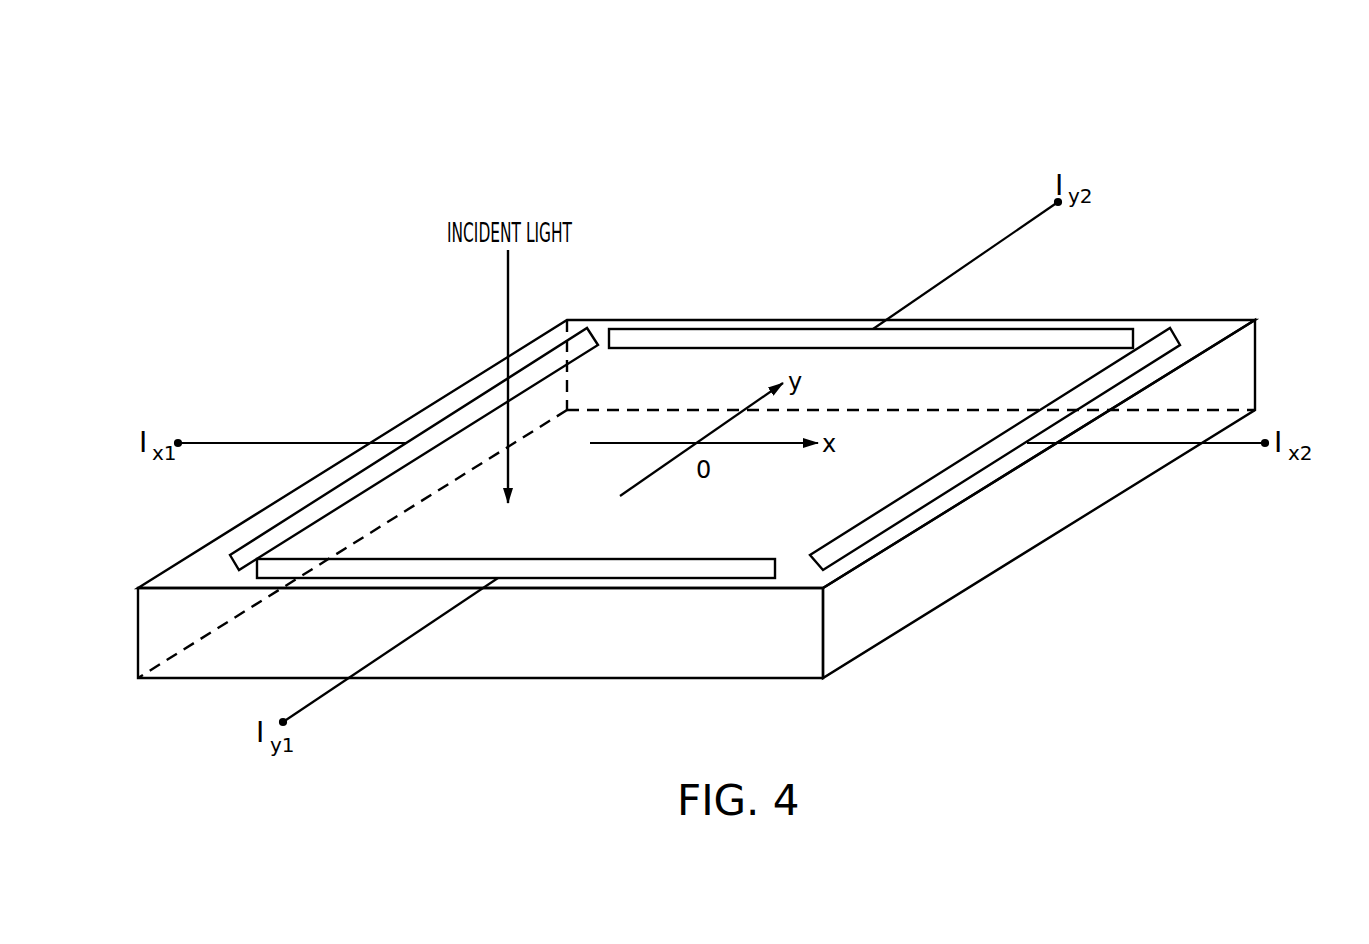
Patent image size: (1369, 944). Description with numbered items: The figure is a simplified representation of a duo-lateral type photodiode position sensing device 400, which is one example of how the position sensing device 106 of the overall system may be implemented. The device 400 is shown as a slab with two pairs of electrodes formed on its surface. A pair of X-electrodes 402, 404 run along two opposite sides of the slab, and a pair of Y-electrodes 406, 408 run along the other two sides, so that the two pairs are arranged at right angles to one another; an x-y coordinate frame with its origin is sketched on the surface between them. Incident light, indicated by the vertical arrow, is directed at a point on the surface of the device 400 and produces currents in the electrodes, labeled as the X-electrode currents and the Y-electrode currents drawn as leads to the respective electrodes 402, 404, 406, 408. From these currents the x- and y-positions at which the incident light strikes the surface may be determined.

The position sensing device 106 is at (739, 367).
The duo-lateral type photodiode position sensing device 400 is at (1255, 362).
The X-electrode 402 is at (437, 423).
The X-electrode 404 is at (962, 483).
The Y-electrode 406 is at (648, 578).
The Y-electrode 408 is at (740, 329).